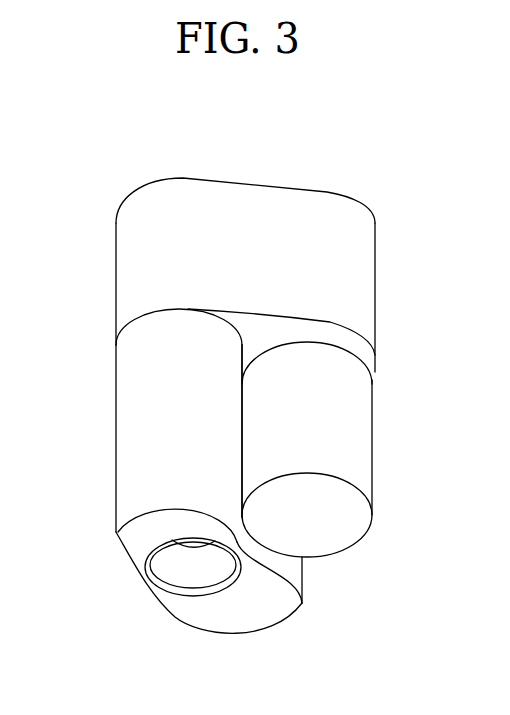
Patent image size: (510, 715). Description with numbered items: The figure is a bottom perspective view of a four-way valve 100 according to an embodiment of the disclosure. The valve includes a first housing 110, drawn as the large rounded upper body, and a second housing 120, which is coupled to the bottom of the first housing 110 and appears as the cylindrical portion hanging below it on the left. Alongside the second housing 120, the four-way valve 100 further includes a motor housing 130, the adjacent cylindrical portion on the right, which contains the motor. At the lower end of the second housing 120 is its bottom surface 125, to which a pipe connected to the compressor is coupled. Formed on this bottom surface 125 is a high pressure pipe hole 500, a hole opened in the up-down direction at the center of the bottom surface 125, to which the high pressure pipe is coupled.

The four-way valve 100 is at (86, 164).
The first housing 110 is at (355, 255).
The second housing 120 is at (143, 429).
The motor housing 130 is at (350, 427).
The bottom surface 125 is at (150, 523).
The high pressure pipe hole 500 is at (183, 563).